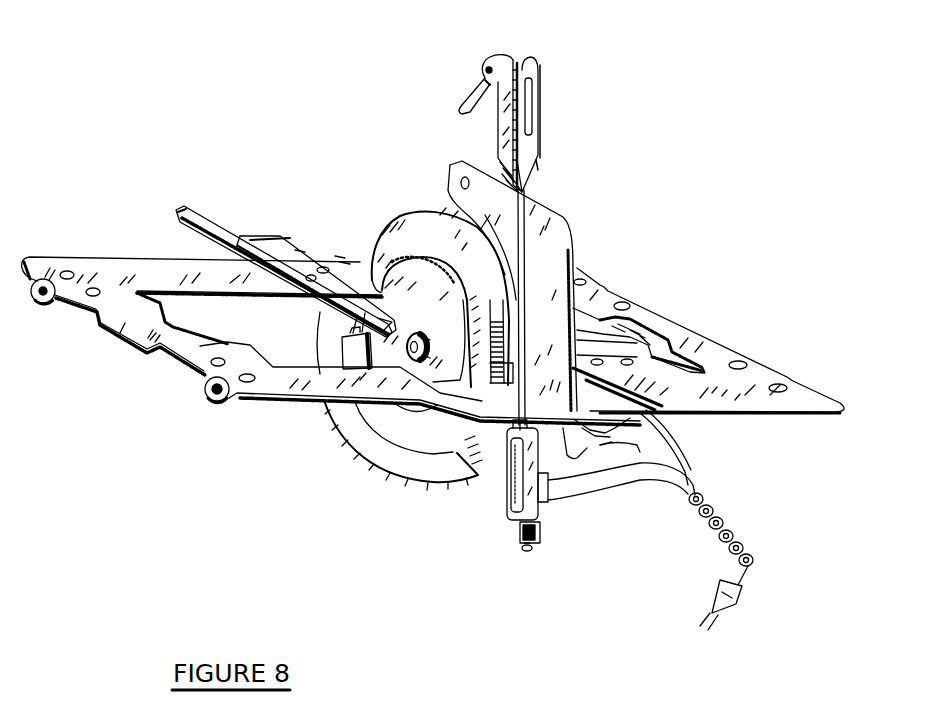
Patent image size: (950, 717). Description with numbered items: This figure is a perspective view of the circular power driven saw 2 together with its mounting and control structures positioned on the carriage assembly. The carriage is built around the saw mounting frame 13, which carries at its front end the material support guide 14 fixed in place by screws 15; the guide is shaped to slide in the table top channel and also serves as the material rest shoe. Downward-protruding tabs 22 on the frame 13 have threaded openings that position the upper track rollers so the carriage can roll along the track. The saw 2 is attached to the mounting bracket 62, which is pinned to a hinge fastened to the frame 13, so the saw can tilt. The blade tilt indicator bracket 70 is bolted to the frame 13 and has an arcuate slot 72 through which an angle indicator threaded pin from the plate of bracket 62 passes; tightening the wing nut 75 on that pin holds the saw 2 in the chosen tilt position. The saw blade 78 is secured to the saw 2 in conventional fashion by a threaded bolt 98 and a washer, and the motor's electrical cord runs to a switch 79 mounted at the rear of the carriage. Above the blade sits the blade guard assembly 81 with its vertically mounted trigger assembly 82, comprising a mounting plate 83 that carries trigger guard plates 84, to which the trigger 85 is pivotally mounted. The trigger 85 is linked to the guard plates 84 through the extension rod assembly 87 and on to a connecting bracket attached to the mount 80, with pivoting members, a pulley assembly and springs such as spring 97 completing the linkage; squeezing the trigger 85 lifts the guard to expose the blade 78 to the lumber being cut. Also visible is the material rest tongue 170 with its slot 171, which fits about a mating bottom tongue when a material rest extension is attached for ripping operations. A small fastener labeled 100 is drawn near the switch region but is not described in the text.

The circular power driven saw 2 is at (368, 203).
The saw mounting frame 13 is at (122, 244).
The material support guide 14 is at (280, 247).
The screws 15 is at (327, 267).
The tabs 22 is at (57, 303).
The mounting bracket 62 is at (378, 482).
The blade tilt indicator bracket 70 is at (620, 440).
The arcuate slot 72 is at (663, 417).
The wing nut 75 is at (613, 455).
The blade 78 is at (415, 268).
The switch 79 is at (549, 503).
The mount 80 is at (545, 541).
The blade guard assembly 81 is at (481, 526).
The trigger assembly 82 is at (554, 46).
The mounting plate 83 is at (560, 262).
The trigger guard plates 84 is at (508, 122).
The trigger 85 is at (468, 92).
The extension rod assembly 87 is at (522, 310).
The spring 97 is at (432, 333).
The threaded bolt 98 is at (411, 340).
The fastener 100 is at (523, 557).
The material rest tongue 170 is at (230, 228).
The slot 171 is at (197, 212).